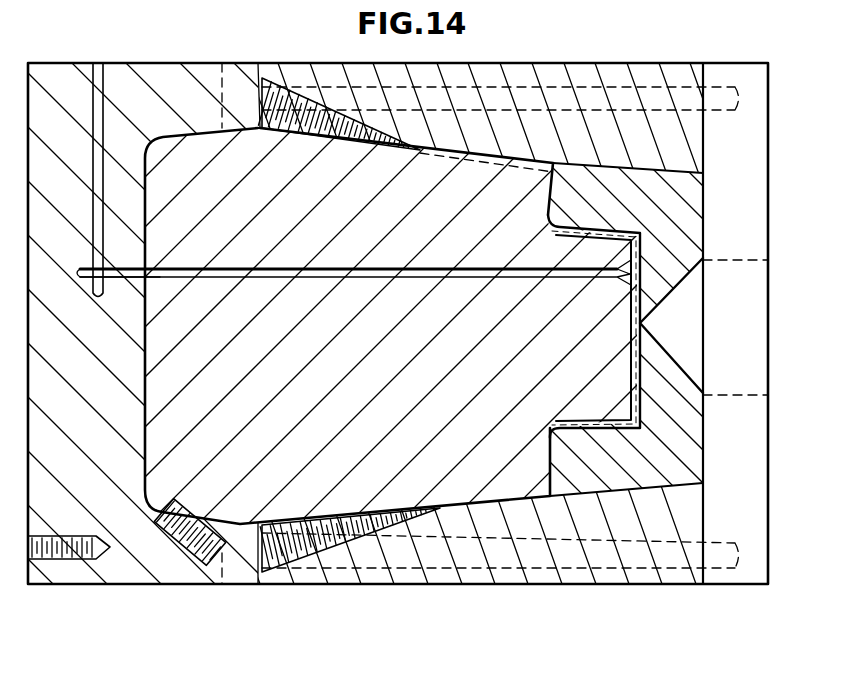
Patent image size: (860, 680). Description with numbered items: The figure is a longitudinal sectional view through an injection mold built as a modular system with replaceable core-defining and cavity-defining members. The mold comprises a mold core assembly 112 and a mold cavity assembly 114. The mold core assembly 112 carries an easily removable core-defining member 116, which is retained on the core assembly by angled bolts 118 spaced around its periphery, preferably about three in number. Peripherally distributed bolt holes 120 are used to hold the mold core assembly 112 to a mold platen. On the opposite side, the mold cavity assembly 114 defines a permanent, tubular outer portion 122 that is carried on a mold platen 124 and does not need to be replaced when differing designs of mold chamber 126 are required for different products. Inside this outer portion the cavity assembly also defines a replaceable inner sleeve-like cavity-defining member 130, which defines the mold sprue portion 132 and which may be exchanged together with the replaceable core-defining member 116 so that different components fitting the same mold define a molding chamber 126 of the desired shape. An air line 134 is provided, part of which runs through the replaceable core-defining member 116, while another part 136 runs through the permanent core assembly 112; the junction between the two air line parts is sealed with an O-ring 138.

The mold core assembly 112 is at (203, 55).
The mold cavity assembly 114 is at (627, 48).
The core-defining member 116 is at (385, 373).
The angled bolts 118 is at (180, 565).
The bolt holes 120 is at (62, 535).
The tubular outer portion 122 is at (541, 63).
The mold platen 124 is at (743, 127).
The mold chamber 126 is at (587, 421).
The cavity-defining member 130 is at (672, 228).
The mold sprue portion 132 is at (680, 313).
The air line 134 is at (284, 268).
The air line part 136 is at (100, 127).
The O-ring 138 is at (150, 269).